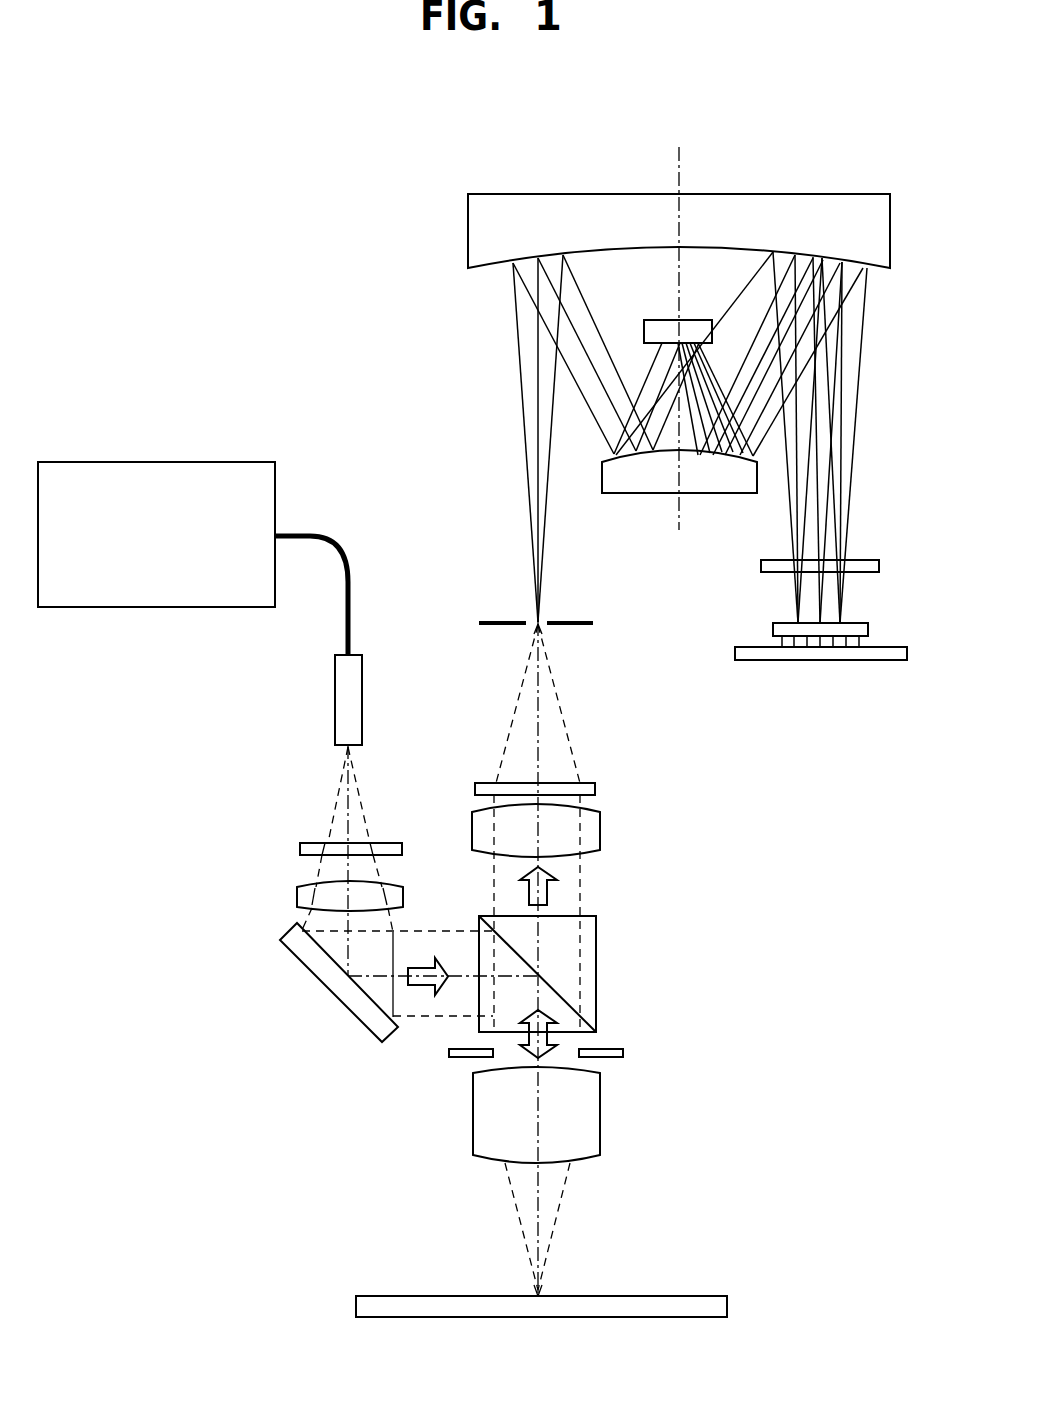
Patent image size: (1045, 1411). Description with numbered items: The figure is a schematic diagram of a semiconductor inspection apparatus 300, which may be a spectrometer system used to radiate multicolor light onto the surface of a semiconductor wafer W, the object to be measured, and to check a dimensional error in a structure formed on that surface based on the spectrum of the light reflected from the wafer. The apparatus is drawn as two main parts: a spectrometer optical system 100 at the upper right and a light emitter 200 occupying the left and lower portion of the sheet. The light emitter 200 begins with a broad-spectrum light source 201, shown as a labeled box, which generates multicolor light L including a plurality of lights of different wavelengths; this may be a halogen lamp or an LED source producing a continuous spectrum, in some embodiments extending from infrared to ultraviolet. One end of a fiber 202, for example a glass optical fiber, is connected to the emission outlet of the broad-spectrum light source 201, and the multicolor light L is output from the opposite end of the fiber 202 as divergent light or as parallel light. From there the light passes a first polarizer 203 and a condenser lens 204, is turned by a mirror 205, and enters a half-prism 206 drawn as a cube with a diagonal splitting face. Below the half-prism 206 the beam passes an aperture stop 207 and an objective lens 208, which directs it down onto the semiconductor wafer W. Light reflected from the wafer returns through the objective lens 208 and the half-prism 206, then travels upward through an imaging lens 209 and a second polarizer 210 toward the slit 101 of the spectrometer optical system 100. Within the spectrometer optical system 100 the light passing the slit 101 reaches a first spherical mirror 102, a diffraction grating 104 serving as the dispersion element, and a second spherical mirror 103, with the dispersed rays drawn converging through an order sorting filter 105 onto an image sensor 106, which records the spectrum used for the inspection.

The semiconductor inspection apparatus 300 is at (323, 128).
The spectrometer optical system 100 is at (862, 133).
The slit 101 is at (575, 618).
The first spherical mirror 102 is at (525, 200).
The second spherical mirror 103 is at (717, 493).
The diffraction grating 104 is at (698, 318).
The order sorting filter 105 is at (865, 562).
The image sensor 106 is at (898, 648).
The light emitter 200 is at (137, 753).
The broad-spectrum light source 201 is at (232, 462).
The fiber 202 is at (322, 537).
The first polarizer 203 is at (388, 843).
The condenser lens 204 is at (297, 893).
The mirror 205 is at (367, 1028).
The half-prism 206 is at (596, 954).
The aperture stop 207 is at (612, 1050).
The objective lens 208 is at (597, 1125).
The imaging lens 209 is at (593, 830).
The second polarizer 210 is at (583, 783).
The multicolor light L is at (325, 810).
The semiconductor wafer W is at (693, 1296).